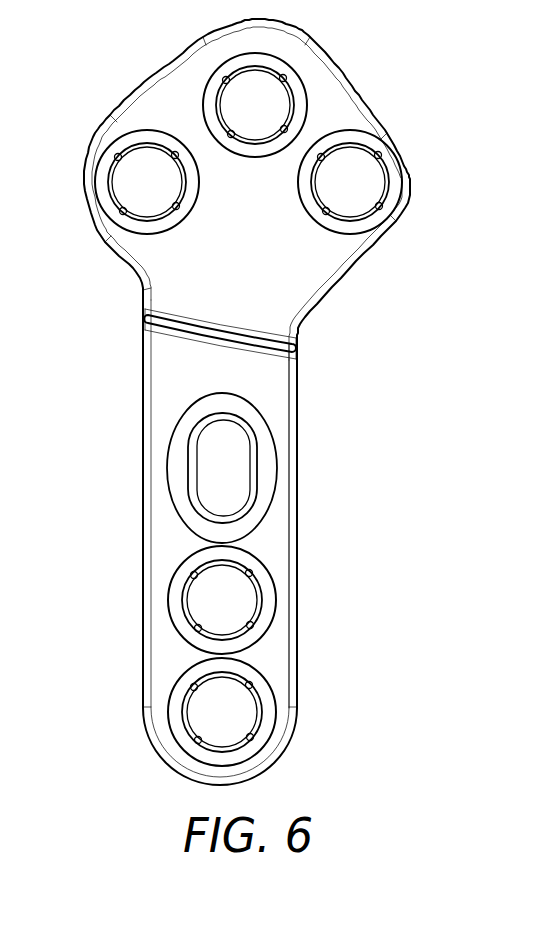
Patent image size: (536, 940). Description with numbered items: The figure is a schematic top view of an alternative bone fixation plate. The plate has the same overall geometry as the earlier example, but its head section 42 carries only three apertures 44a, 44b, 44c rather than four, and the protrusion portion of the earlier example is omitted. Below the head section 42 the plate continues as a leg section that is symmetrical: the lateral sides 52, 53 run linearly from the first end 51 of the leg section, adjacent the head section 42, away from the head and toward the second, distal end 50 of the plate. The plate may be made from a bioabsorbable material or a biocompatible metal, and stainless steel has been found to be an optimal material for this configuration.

The head section 42 is at (77, 17).
The aperture 44a is at (258, 113).
The aperture 44b is at (485, 158).
The aperture 44c is at (157, 195).
The second, distal end 50 is at (287, 743).
The first end 51 is at (360, 328).
The lateral side 52 is at (363, 432).
The lateral side 53 is at (213, 476).